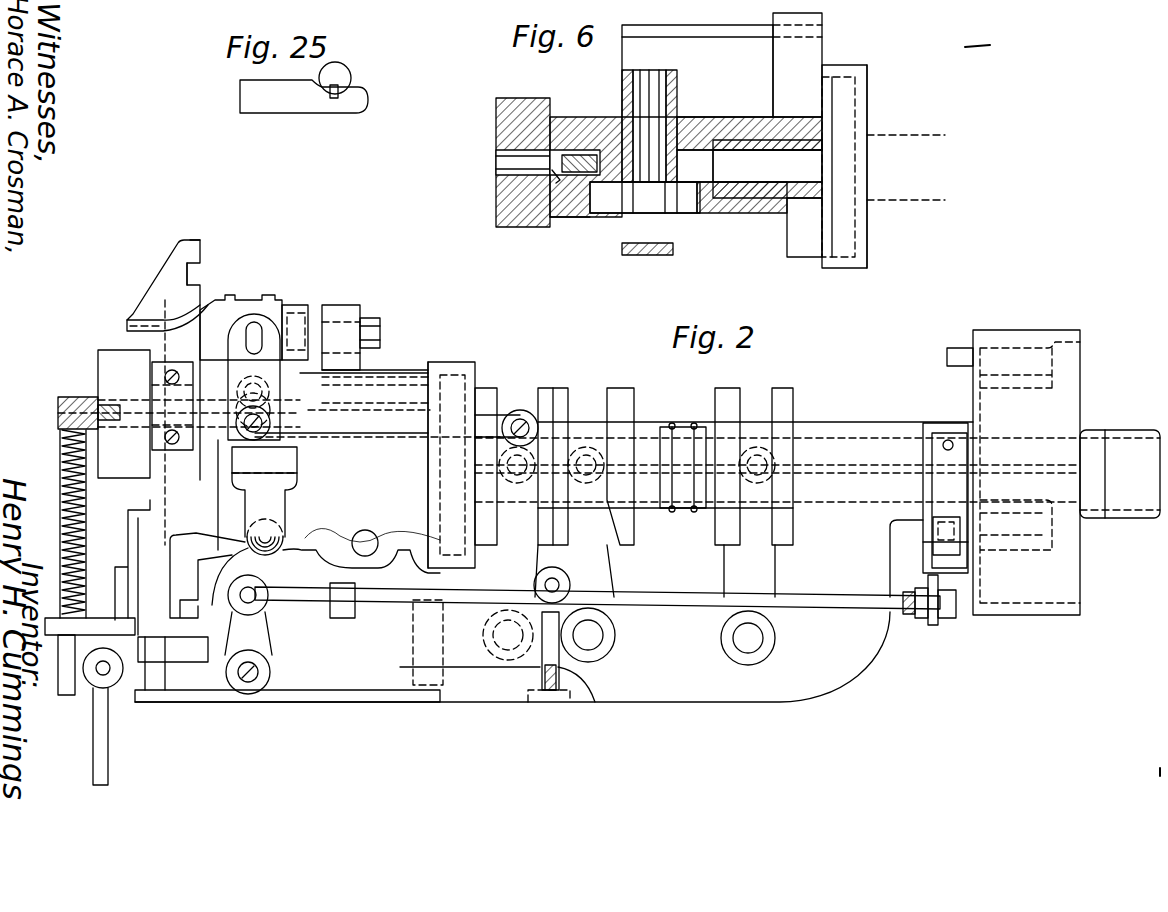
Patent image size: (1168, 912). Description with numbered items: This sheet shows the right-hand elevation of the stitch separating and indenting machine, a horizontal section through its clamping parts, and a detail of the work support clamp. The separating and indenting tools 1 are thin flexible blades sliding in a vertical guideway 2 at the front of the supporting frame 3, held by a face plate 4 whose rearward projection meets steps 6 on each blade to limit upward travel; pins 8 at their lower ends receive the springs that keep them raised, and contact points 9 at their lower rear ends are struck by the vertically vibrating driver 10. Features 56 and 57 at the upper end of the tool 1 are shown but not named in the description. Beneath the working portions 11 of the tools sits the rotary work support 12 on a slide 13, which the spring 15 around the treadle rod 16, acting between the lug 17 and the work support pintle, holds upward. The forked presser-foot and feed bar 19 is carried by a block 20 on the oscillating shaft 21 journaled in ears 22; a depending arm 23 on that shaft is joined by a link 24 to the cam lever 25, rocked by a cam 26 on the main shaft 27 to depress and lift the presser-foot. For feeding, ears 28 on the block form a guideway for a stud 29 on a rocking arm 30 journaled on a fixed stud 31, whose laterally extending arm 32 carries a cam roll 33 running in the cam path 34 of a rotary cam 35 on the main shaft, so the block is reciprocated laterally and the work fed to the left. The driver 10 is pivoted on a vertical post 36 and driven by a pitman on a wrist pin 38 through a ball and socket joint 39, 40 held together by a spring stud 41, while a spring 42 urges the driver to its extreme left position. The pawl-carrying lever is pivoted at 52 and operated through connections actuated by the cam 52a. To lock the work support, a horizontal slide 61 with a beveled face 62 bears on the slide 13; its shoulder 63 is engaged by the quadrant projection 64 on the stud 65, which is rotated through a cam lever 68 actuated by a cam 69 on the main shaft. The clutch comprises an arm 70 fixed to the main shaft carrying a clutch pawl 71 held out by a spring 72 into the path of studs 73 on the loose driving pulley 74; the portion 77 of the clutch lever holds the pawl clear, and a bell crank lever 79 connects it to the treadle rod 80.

In FIG. 2, the separating and indenting tools 1 is at (168, 262).
In FIG. 2, the vertical guideway 2 is at (175, 702).
In FIG. 2, the supporting frame 3 is at (722, 690).
In FIG. 2, the face plate 4 is at (128, 530).
In FIG. 2, the steps or projections 6 is at (58, 412).
In FIG. 2, the pins 8 is at (140, 648).
In FIG. 2, the contact points 9 is at (182, 592).
In FIG. 2, the driver 10 is at (597, 587).
In FIG. 2, the working portions 11 is at (127, 328).
In FIG. 6, the rotary work support 12 is at (496, 130).
In FIG. 2, the rotary work support 12 is at (98, 372).
In FIG. 6, the slide 13 is at (560, 150).
In FIG. 2, the spring 15 is at (60, 460).
In FIG. 2, the treadle rod 16 is at (66, 695).
In FIG. 2, the lug 17 is at (90, 622).
In FIG. 2, the forked presser-foot and feed bar 19 is at (210, 300).
In FIG. 2, the block 20 is at (235, 310).
In FIG. 2, the oscillating shaft 21 is at (254, 322).
In FIG. 2, the ears 22 is at (296, 305).
In FIG. 2, the depending arm 23 is at (380, 322).
In FIG. 2, the link 24 is at (325, 435).
In FIG. 2, the cam lever 25 is at (538, 556).
In FIG. 2, the cam 26 is at (545, 388).
In FIG. 2, the main shaft 27 is at (648, 428).
In FIG. 2, the ears 28 is at (320, 308).
In FIG. 2, the stud 29 is at (322, 353).
In FIG. 2, the rocking arm 30 is at (372, 365).
In FIG. 6, the fixed stud 31 is at (745, 180).
In FIG. 2, the fixed stud 31 is at (372, 395).
In FIG. 6, the laterally extending arm 32 is at (787, 230).
In FIG. 2, the laterally extending arm 32 is at (390, 447).
In FIG. 6, the cam roll 33 is at (832, 255).
In FIG. 2, the cam roll 33 is at (432, 448).
In FIG. 6, the cam path 34 is at (852, 98).
In FIG. 6, the rotary cam 35 is at (867, 262).
In FIG. 2, the rotary cam 35 is at (470, 377).
In FIG. 2, the vertical post 36 is at (560, 668).
In FIG. 2, the wrist pin 38 is at (232, 460).
In FIG. 2, the ball 39 is at (265, 550).
In FIG. 2, the socket 40 is at (266, 522).
In FIG. 2, the spring stud 41 is at (415, 645).
In FIG. 2, the spring 42 is at (350, 610).
In FIG. 2, the pivot 52 is at (598, 575).
In FIG. 2, the cam 52a is at (618, 388).
In FIG. 2, the lever notch 56 is at (202, 250).
In FIG. 2, the lever notch 57 is at (192, 270).
In FIG. 25, the slide 61 is at (273, 108).
In FIG. 6, the slide 61 is at (604, 205).
In FIG. 2, the slide 61 is at (236, 418).
In FIG. 6, the beveled face 62 is at (556, 182).
In FIG. 25, the shoulder 63 is at (352, 88).
In FIG. 6, the shoulder 63 is at (648, 204).
In FIG. 2, the shoulder 63 is at (262, 398).
In FIG. 25, the quadrant projection 64 is at (328, 91).
In FIG. 6, the quadrant projection 64 is at (640, 205).
In FIG. 2, the quadrant projection 64 is at (240, 388).
In FIG. 6, the stud 65 is at (655, 122).
In FIG. 2, the cam lever 68 is at (735, 572).
In FIG. 2, the cam 69 is at (728, 392).
In FIG. 2, the arm 70 is at (925, 530).
In FIG. 2, the clutch pawl 71 is at (955, 600).
In FIG. 2, the spring 72 is at (938, 445).
In FIG. 2, the studs 73 is at (958, 348).
In FIG. 2, the loose driving pulley 74 is at (1080, 390).
In FIG. 2, the downwardly and laterally extending portion 77 is at (930, 585).
In FIG. 2, the bell crank lever 79 is at (262, 636).
In FIG. 2, the treadle rod 80 is at (108, 740).